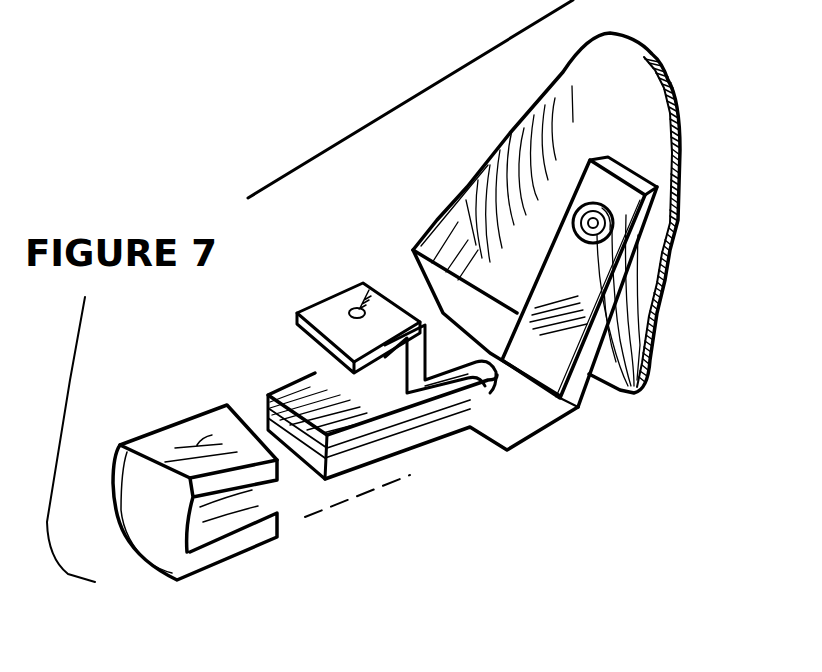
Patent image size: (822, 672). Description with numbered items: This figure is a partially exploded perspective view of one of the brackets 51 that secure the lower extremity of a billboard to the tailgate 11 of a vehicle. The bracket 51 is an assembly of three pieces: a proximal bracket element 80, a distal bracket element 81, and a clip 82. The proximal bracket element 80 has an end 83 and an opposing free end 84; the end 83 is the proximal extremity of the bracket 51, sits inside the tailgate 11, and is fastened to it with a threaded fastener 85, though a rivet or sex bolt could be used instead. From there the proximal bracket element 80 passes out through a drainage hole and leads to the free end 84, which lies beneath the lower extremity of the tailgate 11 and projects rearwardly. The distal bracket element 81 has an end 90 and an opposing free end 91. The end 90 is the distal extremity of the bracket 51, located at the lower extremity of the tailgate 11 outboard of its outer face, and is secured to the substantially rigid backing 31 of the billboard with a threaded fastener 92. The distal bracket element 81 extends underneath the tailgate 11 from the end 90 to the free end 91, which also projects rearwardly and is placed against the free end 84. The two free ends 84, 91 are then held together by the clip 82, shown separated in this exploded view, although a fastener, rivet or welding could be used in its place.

The tailgate 11 is at (684, 100).
The backing 31 is at (635, 88).
The bracket 51 is at (576, 409).
The proximal bracket element 80 is at (428, 357).
The distal bracket element 81 is at (593, 322).
The clip 82 is at (162, 447).
The end 83 is at (336, 305).
The free end 84 is at (303, 378).
The threaded fastener 85 is at (372, 297).
The end 90 is at (592, 178).
The free end 91 is at (395, 442).
The threaded fastener 92 is at (594, 222).